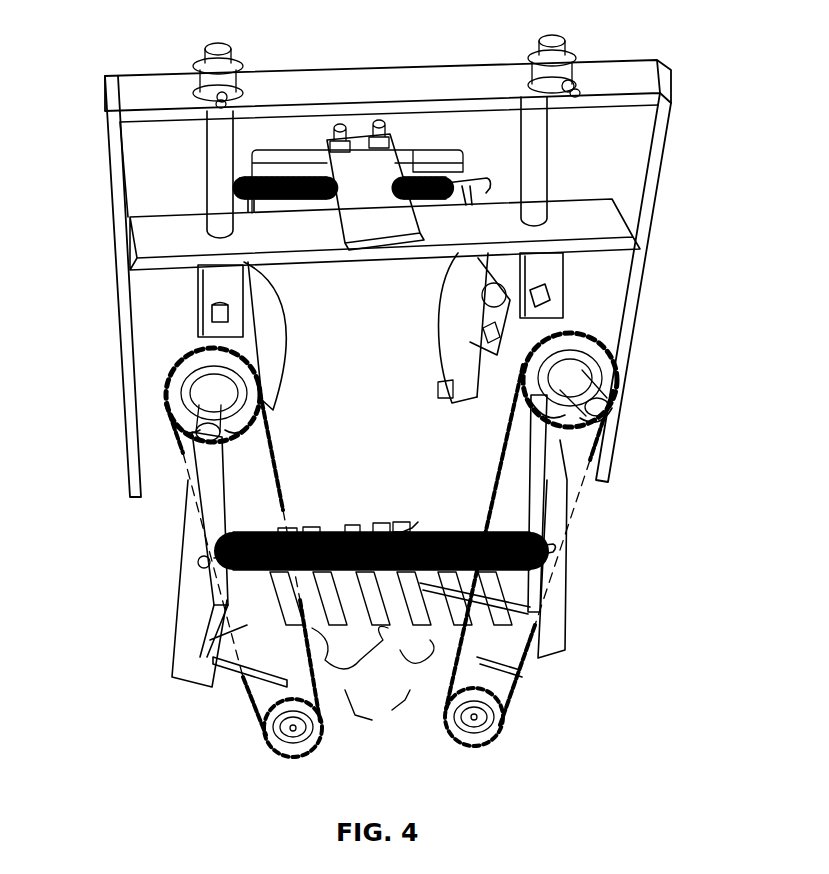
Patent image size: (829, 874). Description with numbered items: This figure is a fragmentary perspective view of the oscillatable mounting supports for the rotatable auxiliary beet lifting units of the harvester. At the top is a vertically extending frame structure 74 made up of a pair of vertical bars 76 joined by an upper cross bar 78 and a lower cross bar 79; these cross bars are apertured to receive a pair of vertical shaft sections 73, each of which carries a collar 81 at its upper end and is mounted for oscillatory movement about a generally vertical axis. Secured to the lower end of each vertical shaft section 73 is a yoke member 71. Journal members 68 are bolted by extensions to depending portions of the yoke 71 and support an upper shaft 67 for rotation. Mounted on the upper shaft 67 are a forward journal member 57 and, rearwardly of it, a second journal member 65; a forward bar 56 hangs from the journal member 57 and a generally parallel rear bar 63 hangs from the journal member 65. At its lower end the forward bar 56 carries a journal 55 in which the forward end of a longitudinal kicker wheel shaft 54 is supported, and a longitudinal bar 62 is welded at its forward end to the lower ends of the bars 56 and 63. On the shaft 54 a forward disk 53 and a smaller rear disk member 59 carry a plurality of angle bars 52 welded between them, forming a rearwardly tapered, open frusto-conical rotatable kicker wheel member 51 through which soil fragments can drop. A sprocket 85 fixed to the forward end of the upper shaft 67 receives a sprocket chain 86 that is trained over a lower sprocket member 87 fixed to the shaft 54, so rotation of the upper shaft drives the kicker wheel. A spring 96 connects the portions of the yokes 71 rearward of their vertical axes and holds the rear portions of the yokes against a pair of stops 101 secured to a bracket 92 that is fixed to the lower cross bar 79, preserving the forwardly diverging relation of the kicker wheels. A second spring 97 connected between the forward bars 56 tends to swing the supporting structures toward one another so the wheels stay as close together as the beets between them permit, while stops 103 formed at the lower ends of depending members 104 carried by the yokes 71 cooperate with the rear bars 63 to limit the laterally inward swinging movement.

The frame structure 74 is at (437, 60).
The cross bar 78 is at (353, 80).
The vertical bars 76 is at (636, 289).
The cross bar 79 is at (573, 208).
The yoke member 71 is at (238, 198).
The vertical shaft section 73 is at (402, 54).
The collar 81 is at (237, 65).
The bracket 92 is at (358, 213).
The spring 96 is at (436, 180).
The stops 101 is at (264, 208).
The journal member 68 is at (207, 342).
The depending members 104 is at (280, 298).
The journal member 65 is at (485, 275).
The upper shaft 67 is at (500, 310).
The stops 103 is at (440, 388).
The journal member 57 is at (542, 328).
The sprocket 85 is at (252, 413).
The sprocket chain 86 is at (275, 455).
The bar 63 is at (228, 478).
The bar 56 is at (188, 600).
The longitudinal bar 62 is at (213, 633).
The journal 55 is at (243, 677).
The rear disk member 59 is at (303, 527).
The spring 97 is at (377, 527).
The bars 52 is at (400, 678).
The disk 53 is at (413, 710).
The rotatable member 51 is at (390, 712).
The shaft 54 is at (293, 732).
The lower sprocket member 87 is at (270, 745).